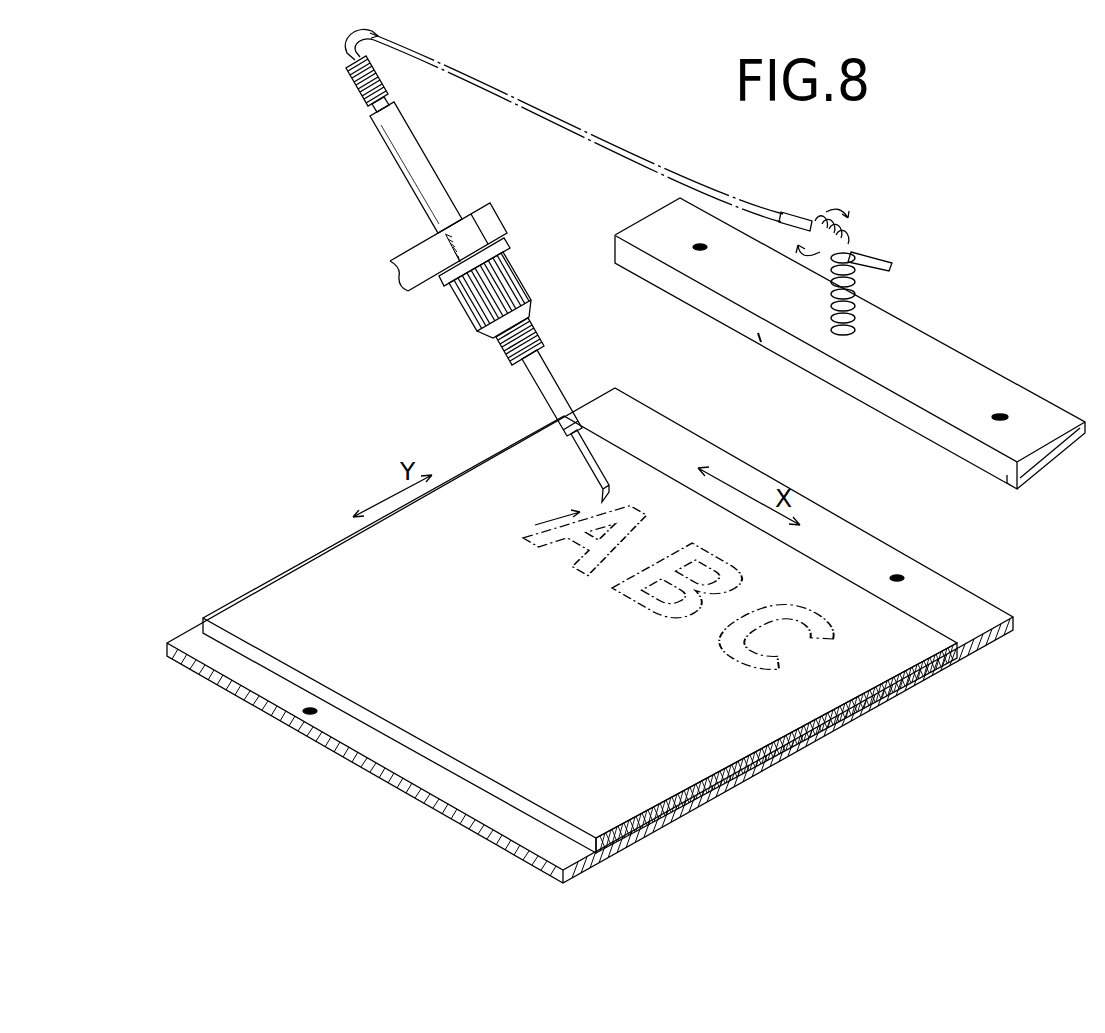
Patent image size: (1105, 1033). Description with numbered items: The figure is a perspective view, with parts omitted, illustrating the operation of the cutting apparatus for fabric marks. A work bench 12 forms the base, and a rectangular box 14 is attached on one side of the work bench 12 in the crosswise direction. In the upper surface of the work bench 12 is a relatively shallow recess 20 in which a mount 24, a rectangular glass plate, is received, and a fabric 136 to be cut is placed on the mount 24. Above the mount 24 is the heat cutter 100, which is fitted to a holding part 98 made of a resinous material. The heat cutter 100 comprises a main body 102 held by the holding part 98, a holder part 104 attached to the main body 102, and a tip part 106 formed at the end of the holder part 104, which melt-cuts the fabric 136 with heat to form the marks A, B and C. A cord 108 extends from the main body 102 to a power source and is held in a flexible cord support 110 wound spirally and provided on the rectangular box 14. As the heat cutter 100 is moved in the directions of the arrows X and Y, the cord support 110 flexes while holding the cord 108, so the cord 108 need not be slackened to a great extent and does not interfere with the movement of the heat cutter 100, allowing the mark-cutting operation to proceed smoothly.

The work bench 12 is at (297, 732).
The rectangular box 14 is at (986, 356).
The recess 20 is at (677, 810).
The mount 24 is at (776, 748).
The fabric 136 is at (772, 745).
The holding part 98 is at (407, 258).
The heat cutter 100 is at (495, 282).
The main body 102 is at (425, 177).
The holder part 104 is at (527, 343).
The tip part 106 is at (608, 508).
The cord 108 is at (349, 52).
The cord support 110 is at (860, 287).